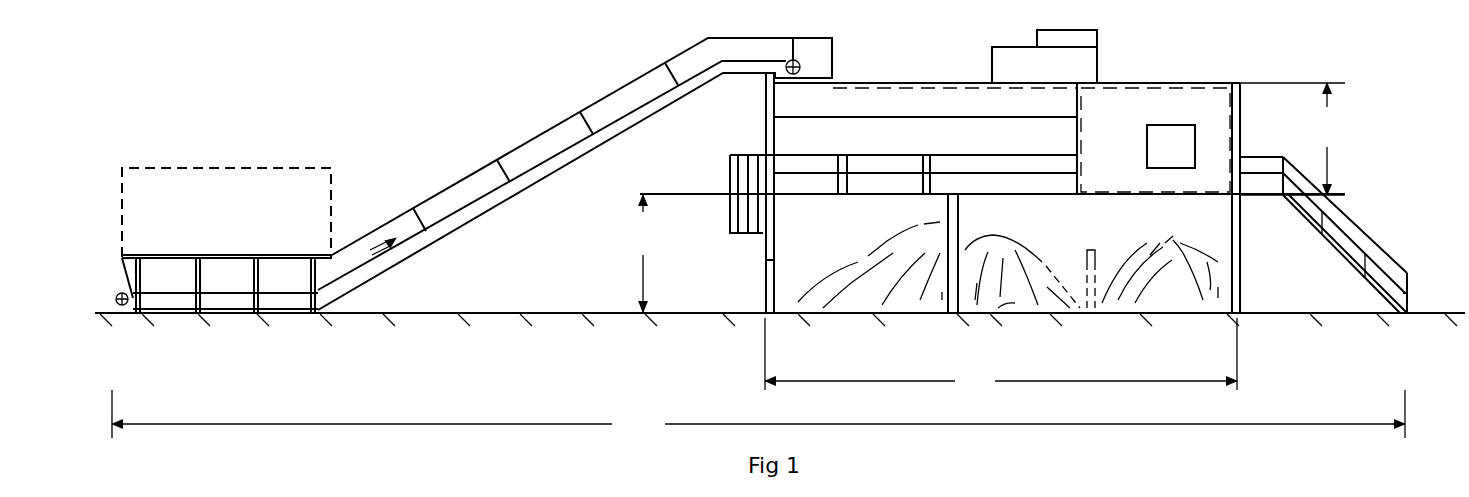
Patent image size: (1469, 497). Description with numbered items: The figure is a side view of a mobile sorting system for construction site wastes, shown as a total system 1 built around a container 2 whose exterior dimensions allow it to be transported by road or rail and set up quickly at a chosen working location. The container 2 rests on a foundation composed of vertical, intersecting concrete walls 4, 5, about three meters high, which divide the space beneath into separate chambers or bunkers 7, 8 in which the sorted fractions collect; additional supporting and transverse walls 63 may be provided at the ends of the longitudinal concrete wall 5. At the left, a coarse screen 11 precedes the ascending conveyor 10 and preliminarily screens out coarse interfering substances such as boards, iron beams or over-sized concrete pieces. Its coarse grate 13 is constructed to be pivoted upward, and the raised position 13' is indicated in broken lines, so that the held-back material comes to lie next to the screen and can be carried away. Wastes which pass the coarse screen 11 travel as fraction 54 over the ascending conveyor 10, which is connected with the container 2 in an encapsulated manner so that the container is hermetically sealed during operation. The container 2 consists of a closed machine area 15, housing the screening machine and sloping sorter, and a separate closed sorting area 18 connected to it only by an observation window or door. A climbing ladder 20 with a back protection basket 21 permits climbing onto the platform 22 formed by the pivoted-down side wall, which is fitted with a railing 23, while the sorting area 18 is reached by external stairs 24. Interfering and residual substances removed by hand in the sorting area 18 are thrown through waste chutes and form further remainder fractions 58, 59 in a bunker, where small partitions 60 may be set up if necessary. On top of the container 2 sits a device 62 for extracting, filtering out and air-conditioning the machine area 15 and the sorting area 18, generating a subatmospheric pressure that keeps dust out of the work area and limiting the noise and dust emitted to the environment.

The total system 1 is at (1206, 41).
The container 2 is at (1243, 102).
The concrete wall 4 is at (948, 207).
The concrete wall 5 is at (1103, 226).
The bunker 7 is at (872, 296).
The bunker 8 is at (993, 313).
The ascending conveyor 10 is at (535, 122).
The coarse screen 11 is at (128, 207).
The coarse grate 13 is at (224, 264).
The alternative feed conveyor position 13' is at (345, 186).
The machine area 15 is at (870, 97).
The sorting area 18 is at (1215, 147).
The climbing ladder 20 is at (759, 263).
The back protection basket 21 is at (730, 175).
The platform 22 is at (848, 186).
The railing 23 is at (946, 153).
The external stairs 24 is at (1343, 217).
The fraction 54 is at (387, 250).
The remainder fraction 58 is at (1138, 258).
The remainder fraction 59 is at (1195, 256).
The partition 60 is at (1087, 258).
The device for extracting, filtering out and air-conditioning 62 is at (1083, 60).
The supporting and transverse wall 63 is at (776, 258).